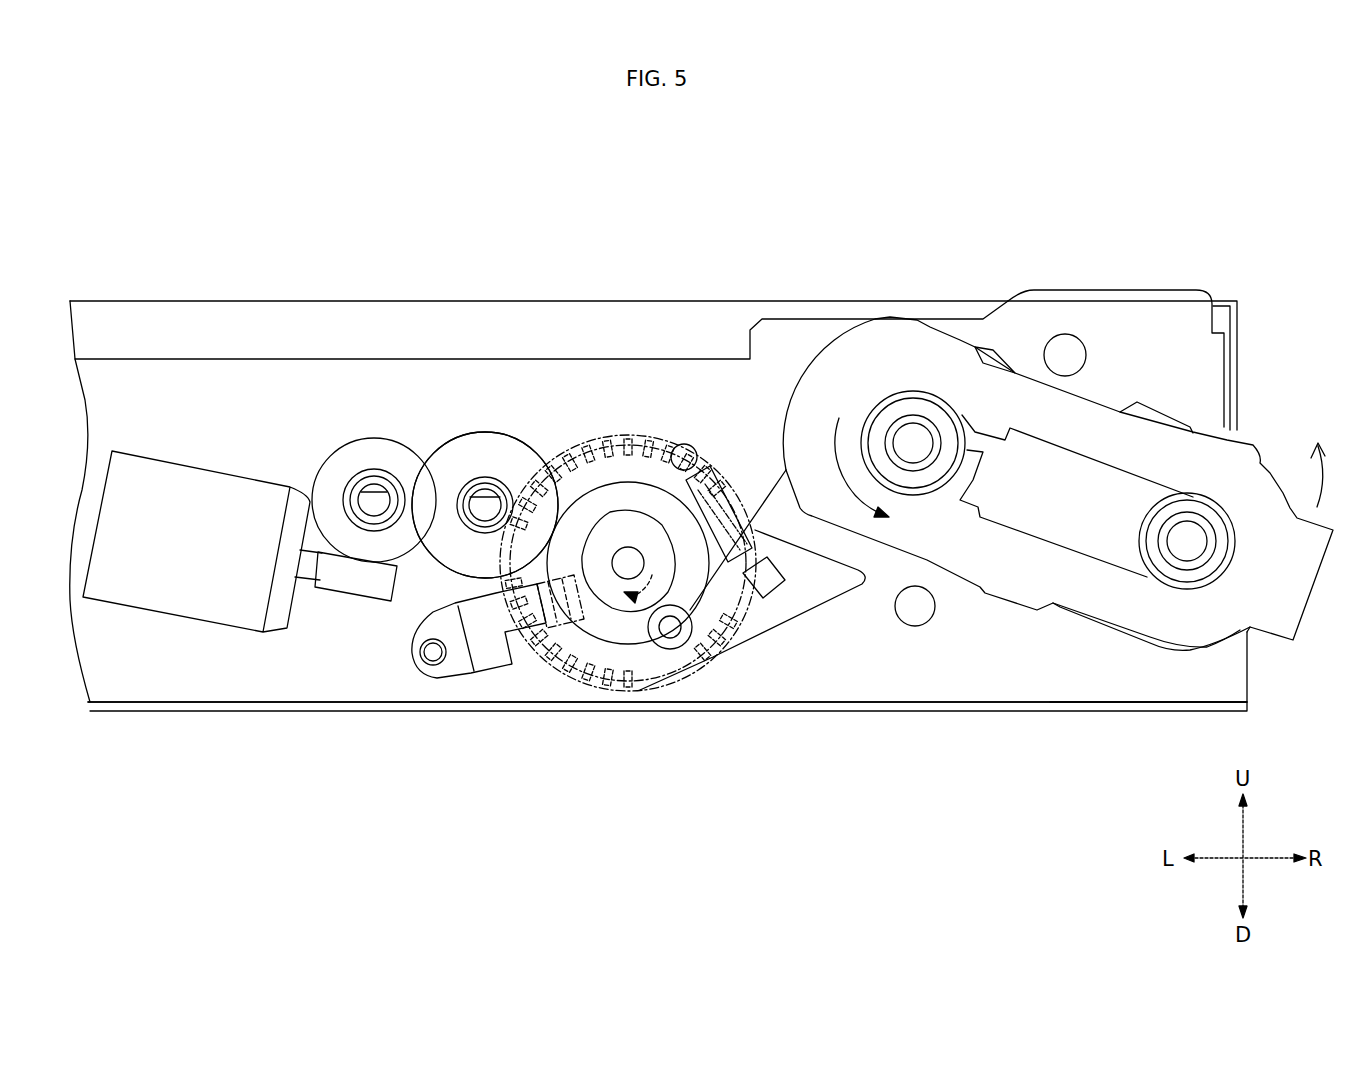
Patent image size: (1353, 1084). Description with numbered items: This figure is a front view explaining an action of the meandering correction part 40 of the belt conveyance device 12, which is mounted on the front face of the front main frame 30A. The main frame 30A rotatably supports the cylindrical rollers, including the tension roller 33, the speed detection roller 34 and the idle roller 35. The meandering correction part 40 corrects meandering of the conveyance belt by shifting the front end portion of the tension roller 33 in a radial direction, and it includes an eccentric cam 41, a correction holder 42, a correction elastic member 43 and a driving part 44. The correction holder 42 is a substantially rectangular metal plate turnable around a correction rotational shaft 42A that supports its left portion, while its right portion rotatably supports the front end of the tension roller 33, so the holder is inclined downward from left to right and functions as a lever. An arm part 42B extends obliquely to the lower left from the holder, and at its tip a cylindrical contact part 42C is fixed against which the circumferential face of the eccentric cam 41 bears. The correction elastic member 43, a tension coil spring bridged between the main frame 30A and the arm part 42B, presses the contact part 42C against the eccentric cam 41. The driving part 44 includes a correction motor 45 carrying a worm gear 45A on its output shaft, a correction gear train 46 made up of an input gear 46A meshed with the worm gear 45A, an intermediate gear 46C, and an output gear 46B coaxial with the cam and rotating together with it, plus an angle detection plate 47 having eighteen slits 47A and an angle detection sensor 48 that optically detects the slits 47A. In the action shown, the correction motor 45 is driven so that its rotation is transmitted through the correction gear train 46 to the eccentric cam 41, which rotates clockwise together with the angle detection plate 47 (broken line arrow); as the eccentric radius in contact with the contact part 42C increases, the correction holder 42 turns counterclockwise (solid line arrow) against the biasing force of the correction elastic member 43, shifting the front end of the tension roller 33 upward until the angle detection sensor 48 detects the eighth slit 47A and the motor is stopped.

The belt conveyance device 12 is at (672, 220).
The meandering correction part 40 is at (729, 266).
The main frame 30A is at (1071, 685).
The tension roller 33 is at (1182, 555).
The speed detection roller 34 is at (1063, 350).
The idle roller 35 is at (914, 618).
The eccentric cam 41 is at (630, 600).
The correction holder 42 is at (862, 340).
The correction rotational shaft 42A is at (913, 440).
The arm part 42B is at (790, 605).
The contact part 42C is at (665, 645).
The correction elastic member 43 is at (730, 492).
The driving part 44 is at (383, 684).
The correction motor 45 is at (243, 605).
The worm gear 45A is at (350, 580).
The correction gear train 46 is at (434, 432).
The input gear 46A is at (372, 460).
The output gear 46B is at (599, 498).
The intermediate gear 46C is at (523, 455).
The angle detection plate 47 is at (570, 670).
The slit 47A is at (527, 660).
The angle detection sensor 48 is at (510, 655).